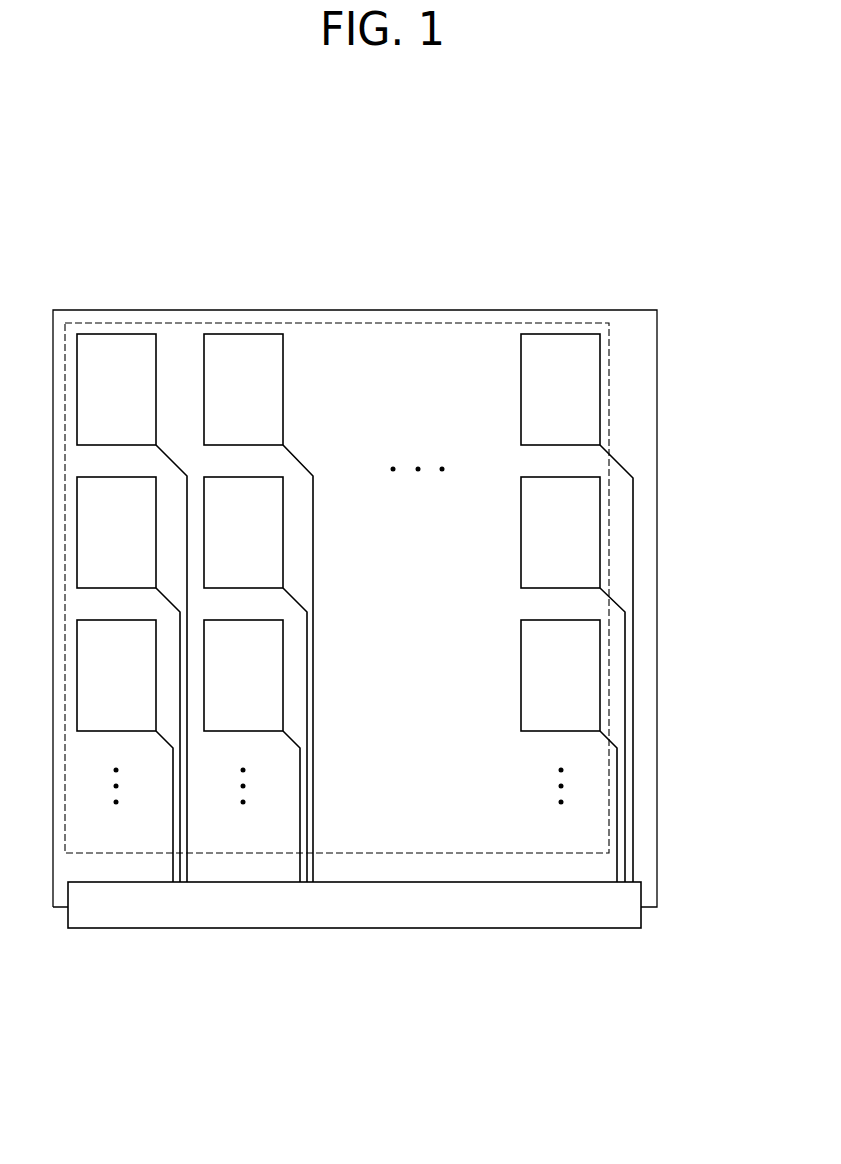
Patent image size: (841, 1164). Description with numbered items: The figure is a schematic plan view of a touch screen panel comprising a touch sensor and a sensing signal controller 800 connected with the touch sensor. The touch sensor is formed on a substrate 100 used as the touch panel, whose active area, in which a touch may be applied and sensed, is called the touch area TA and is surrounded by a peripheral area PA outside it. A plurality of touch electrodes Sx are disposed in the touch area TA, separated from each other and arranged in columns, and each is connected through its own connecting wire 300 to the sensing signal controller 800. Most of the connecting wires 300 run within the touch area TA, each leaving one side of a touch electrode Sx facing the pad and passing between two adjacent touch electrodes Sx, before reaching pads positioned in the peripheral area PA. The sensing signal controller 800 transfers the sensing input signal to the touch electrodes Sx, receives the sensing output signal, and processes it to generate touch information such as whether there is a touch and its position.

The substrate 100 is at (657, 452).
The peripheral area PA is at (631, 325).
The touch area TA is at (455, 323).
The touch electrodes Sx is at (116, 352).
The connecting wires 300 is at (300, 460).
The sensing signal controller 800 is at (523, 930).